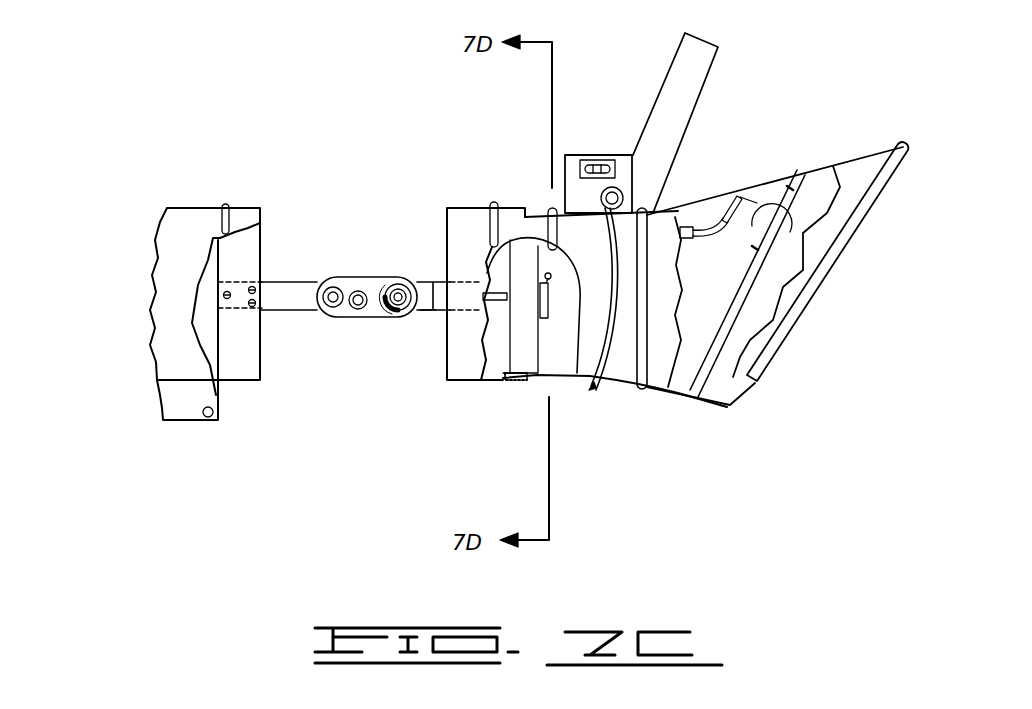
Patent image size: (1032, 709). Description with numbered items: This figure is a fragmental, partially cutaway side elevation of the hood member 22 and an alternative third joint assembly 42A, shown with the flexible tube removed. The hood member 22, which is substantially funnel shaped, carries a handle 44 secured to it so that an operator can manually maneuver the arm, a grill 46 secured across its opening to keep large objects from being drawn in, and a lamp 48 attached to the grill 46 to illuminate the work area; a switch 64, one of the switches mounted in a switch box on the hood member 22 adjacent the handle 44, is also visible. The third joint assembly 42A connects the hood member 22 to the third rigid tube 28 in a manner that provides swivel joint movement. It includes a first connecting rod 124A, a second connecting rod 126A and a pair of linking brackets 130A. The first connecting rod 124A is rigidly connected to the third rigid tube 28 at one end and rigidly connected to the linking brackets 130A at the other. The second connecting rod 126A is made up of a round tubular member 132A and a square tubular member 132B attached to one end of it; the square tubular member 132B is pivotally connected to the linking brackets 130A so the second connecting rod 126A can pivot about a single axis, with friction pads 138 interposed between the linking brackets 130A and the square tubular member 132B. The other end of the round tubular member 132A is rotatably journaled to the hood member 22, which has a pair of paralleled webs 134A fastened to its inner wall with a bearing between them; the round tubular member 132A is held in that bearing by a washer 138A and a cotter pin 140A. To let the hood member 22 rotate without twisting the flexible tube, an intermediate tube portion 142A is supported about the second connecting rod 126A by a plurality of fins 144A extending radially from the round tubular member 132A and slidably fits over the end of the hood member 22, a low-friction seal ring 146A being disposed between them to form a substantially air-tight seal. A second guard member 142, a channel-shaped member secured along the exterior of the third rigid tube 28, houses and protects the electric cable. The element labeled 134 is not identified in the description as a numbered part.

The hood member 22 is at (847, 162).
The third rigid tube 28 is at (167, 208).
The third joint assembly 42A is at (303, 133).
The handle 44 is at (713, 75).
The grill 46 is at (707, 393).
The lamp 48 is at (775, 256).
The switch 64 is at (607, 157).
The first connecting rod 124A is at (292, 312).
The second connecting rod 126A is at (428, 322).
The linking brackets 130A is at (335, 277).
The round tubular member 132A is at (443, 287).
The square tubular member 132B is at (422, 280).
The inner plate 134 is at (263, 247).
The paralleled webs 134A is at (475, 385).
The friction pads 138 is at (405, 318).
The washer 138A is at (542, 322).
The cotter pin 140A is at (549, 322).
The second guard member 142 is at (168, 422).
The intermediate tube portion 142A is at (472, 207).
The fins 144A is at (487, 347).
The seal ring 146A is at (517, 385).